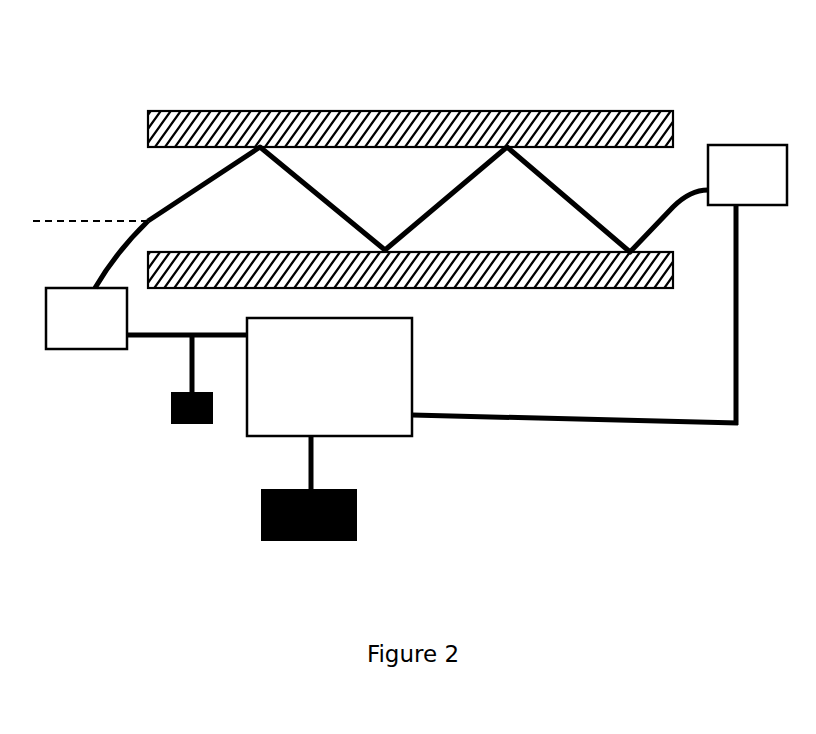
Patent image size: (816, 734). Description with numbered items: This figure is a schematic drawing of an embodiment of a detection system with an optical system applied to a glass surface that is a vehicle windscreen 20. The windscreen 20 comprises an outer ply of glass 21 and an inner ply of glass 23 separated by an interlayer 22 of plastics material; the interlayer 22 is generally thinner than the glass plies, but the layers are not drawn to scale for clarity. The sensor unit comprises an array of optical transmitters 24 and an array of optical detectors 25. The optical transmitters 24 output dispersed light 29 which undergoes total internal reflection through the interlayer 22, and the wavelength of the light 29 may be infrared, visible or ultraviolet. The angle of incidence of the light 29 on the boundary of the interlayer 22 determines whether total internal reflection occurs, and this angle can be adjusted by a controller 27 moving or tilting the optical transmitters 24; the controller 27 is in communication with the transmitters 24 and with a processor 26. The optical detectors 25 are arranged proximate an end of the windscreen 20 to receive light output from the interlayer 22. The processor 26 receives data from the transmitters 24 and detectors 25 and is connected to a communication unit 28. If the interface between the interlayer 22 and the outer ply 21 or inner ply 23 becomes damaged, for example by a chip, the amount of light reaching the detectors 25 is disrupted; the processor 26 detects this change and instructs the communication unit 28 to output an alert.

The vehicle windscreen 20 is at (167, 78).
The outer ply of glass 21 is at (390, 110).
The interlayer 22 is at (162, 168).
The inner ply of glass 23 is at (485, 289).
The array of optical transmitters 24 is at (88, 349).
The array of optical detectors 25 is at (747, 145).
The processor 26 is at (373, 436).
The controller 27 is at (196, 424).
The communication unit 28 is at (290, 541).
The dispersed light 29 is at (98, 270).